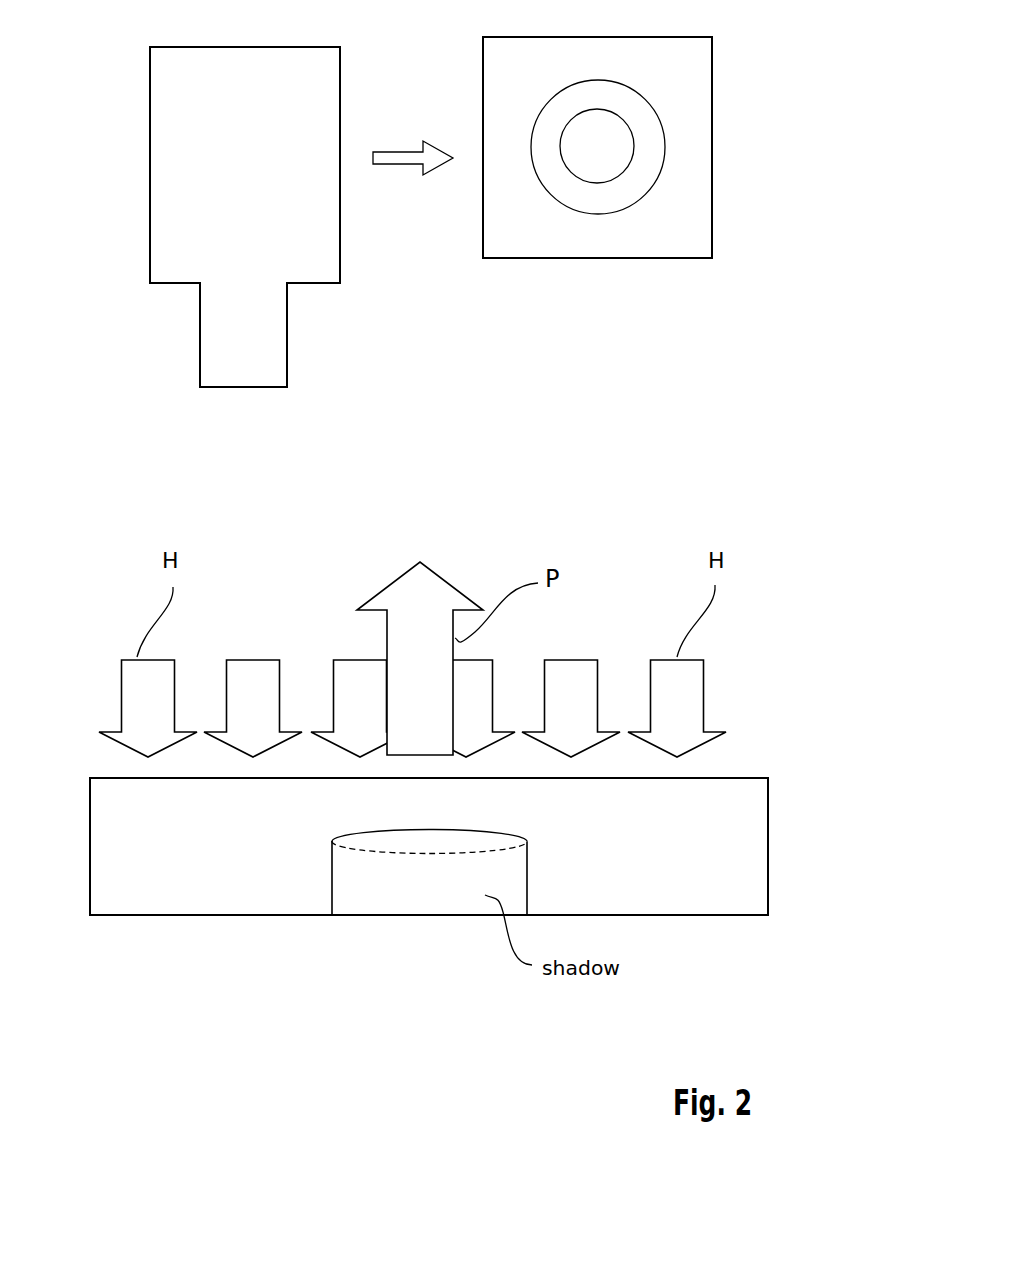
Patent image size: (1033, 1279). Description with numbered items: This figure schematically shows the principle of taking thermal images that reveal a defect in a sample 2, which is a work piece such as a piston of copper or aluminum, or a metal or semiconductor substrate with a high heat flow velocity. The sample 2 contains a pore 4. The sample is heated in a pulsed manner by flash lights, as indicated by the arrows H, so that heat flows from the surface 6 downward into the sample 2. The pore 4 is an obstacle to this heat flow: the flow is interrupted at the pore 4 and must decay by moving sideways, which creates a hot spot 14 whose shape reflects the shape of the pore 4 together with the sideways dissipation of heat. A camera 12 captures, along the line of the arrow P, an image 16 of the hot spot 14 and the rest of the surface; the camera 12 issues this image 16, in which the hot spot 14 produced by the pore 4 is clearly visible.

The sample 2 is at (178, 917).
The pore 4 is at (402, 845).
The surface 6 is at (730, 778).
The camera 12 is at (150, 207).
The hot spot 14 is at (588, 156).
The image 16 is at (545, 248).